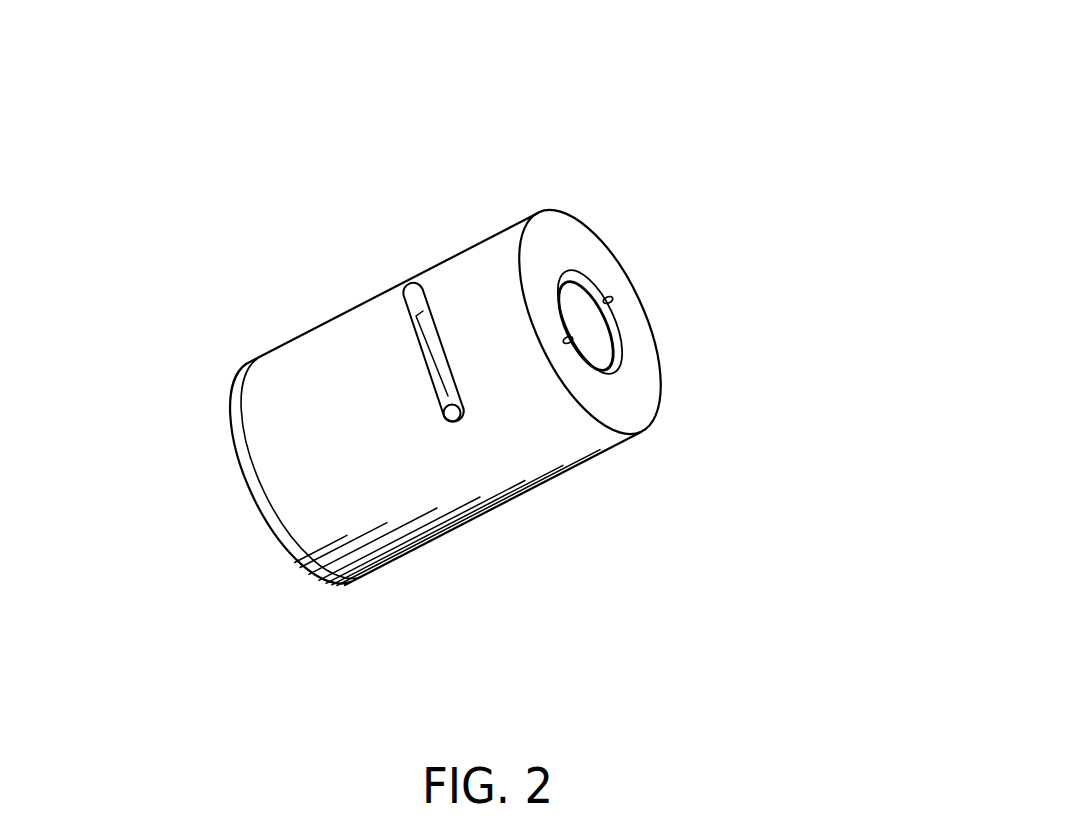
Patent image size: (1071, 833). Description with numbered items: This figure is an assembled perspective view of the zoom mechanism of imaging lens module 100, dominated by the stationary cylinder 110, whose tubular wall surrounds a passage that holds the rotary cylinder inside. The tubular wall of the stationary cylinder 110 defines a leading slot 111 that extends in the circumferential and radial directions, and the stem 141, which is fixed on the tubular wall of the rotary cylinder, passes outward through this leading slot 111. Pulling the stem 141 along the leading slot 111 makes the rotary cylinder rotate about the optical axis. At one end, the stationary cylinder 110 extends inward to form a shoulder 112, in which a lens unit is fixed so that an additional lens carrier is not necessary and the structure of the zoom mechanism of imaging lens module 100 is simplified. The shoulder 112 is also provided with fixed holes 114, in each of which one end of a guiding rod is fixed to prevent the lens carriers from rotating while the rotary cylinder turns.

The zoom mechanism of imaging lens module 100 is at (258, 136).
The stationary cylinder 110 is at (358, 447).
The leading slot 111 is at (413, 340).
The shoulder 112 is at (567, 262).
The fixed hole 114 is at (612, 298).
The stem 141 is at (441, 424).